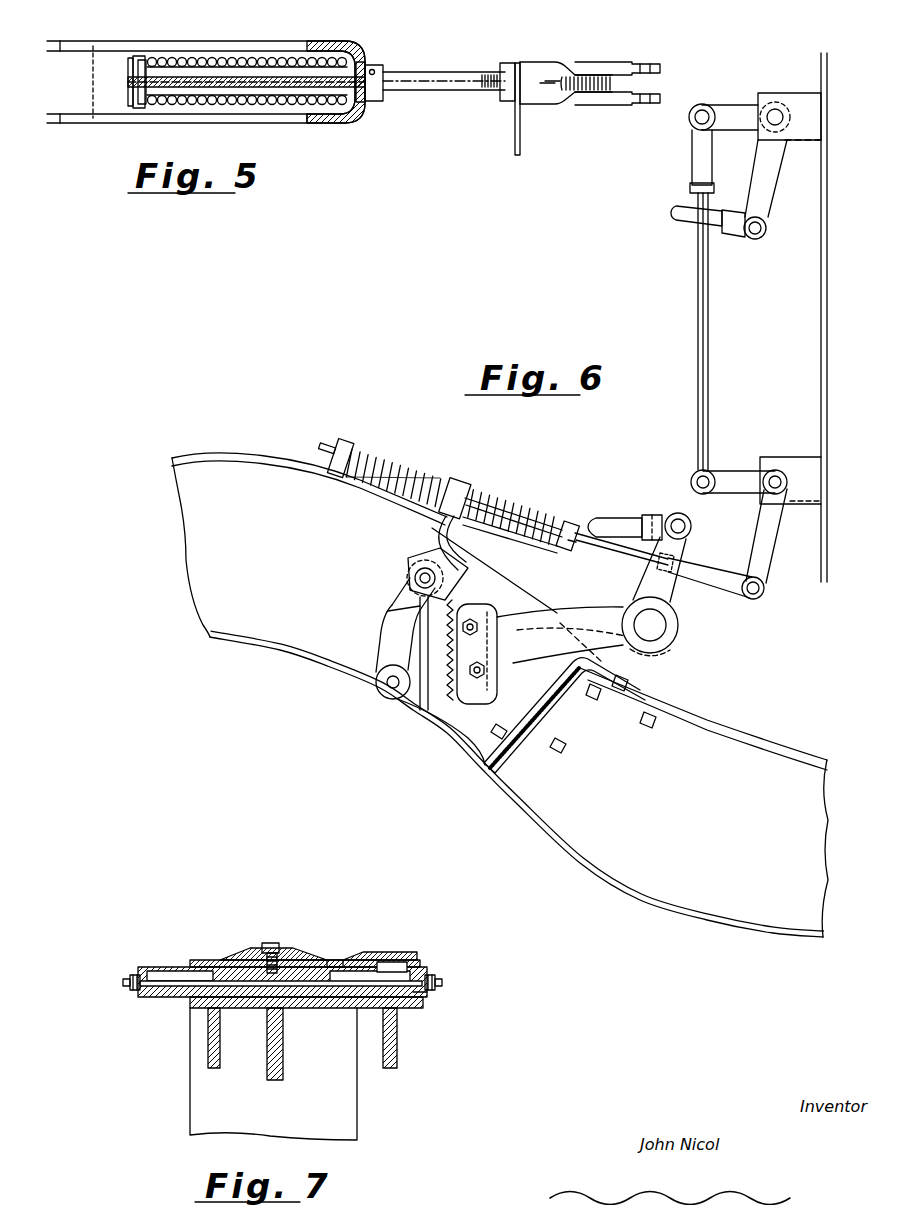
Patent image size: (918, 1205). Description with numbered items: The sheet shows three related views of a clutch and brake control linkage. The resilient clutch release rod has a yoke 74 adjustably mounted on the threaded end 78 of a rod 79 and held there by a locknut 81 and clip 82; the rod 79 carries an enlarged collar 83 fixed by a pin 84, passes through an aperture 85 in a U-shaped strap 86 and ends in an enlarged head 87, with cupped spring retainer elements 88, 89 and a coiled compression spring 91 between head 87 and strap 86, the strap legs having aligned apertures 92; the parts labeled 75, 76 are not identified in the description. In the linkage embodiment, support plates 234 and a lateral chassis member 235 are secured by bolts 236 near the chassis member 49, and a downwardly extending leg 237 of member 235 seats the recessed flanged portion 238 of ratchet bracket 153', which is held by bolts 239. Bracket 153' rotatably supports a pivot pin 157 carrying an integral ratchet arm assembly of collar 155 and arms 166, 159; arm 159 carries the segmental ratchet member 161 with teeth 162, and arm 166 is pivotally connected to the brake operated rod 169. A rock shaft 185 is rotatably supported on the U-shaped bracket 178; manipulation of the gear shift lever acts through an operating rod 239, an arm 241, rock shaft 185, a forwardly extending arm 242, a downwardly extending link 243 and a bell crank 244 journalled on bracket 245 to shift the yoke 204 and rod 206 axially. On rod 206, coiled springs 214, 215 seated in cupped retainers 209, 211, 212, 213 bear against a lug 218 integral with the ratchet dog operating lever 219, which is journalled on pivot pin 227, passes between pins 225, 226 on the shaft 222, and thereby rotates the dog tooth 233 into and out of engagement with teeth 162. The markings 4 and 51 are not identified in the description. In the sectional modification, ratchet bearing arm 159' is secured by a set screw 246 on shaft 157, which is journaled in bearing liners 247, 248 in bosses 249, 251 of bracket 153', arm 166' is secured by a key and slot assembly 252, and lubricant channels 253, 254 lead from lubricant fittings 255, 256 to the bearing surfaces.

In FIG. 5, the yoke 74 is at (545, 67).
In FIG. 5, the clevis arm 75 is at (605, 62).
In FIG. 5, the clevis arm 76 is at (615, 105).
In FIG. 5, the threaded end 78 is at (592, 92).
In FIG. 5, the rod 79 is at (440, 72).
In FIG. 5, the locknut 81 is at (505, 64).
In FIG. 5, the clip 82 is at (516, 145).
In FIG. 5, the enlarged collar 83 is at (384, 66).
In FIG. 5, the pin 84 is at (375, 101).
In FIG. 5, the aperture 85 is at (364, 62).
In FIG. 5, the U-shaped strap 86 is at (332, 41).
In FIG. 5, the enlarged head portion 87 is at (130, 80).
In FIG. 5, the cupped spring retainer element 88 is at (140, 56).
In FIG. 5, the cupped spring retainer element 89 is at (338, 123).
In FIG. 5, the coiled compression spring 91 is at (225, 58).
In FIG. 5, the aligned apertures 92 is at (93, 46).
In FIG. 6, the wall 4 is at (830, 78).
In FIG. 6, the U-shaped bracket 178 is at (808, 110).
In FIG. 6, the rock shaft 185 is at (775, 108).
In FIG. 6, the forwardly extending arm 242 is at (733, 110).
In FIG. 6, the arm 241 is at (770, 183).
In FIG. 6, the operating rod 239 is at (675, 215).
In FIG. 6, the link 243 is at (698, 318).
In FIG. 6, the bracket 245 is at (800, 458).
In FIG. 6, the bell crank 244 is at (730, 495).
In FIG. 6, the yoke 204 is at (740, 592).
In FIG. 6, the rod 206 is at (612, 540).
In FIG. 6, the cupped spring retainer element 209 is at (574, 522).
In FIG. 6, the cupped spring retainer element 211 is at (492, 492).
In FIG. 6, the cupped spring retainer element 212 is at (452, 476).
In FIG. 6, the cupped spring retainer element 213 is at (340, 440).
In FIG. 6, the coiled compression spring 214 is at (530, 510).
In FIG. 6, the coiled spring 215 is at (400, 466).
In FIG. 6, the lug 218 is at (470, 480).
In FIG. 6, the shaft 222 is at (405, 575).
In FIG. 6, the pin 225 is at (428, 556).
In FIG. 6, the pin 226 is at (390, 604).
In FIG. 6, the ratchet dog operating lever 219 is at (375, 646).
In FIG. 6, the pivot pin 227 is at (390, 686).
In FIG. 6, the projecting tooth 233 is at (462, 566).
In FIG. 6, the chassis member 49 is at (216, 470).
In FIG. 6, the ratchet bracket 153' is at (517, 784).
In FIG. 7, the ratchet bracket 153' is at (307, 1074).
In FIG. 6, the floor board 51 is at (752, 922).
In FIG. 6, the collar 155 is at (660, 640).
In FIG. 6, the pivot pin 157 is at (658, 622).
In FIG. 7, the pivot pin 157 is at (162, 997).
In FIG. 6, the arm 159 is at (561, 620).
In FIG. 6, the segmental ratchet member 161 is at (478, 696).
In FIG. 6, the teeth 162 is at (449, 672).
In FIG. 6, the arm 166 is at (681, 557).
In FIG. 6, the rod 169 is at (630, 516).
In FIG. 6, the support plates 234 is at (655, 724).
In FIG. 6, the lateral chassis member 235 is at (600, 696).
In FIG. 6, the bolts 236 is at (625, 680).
In FIG. 6, the downwardly extending leg 237 is at (565, 712).
In FIG. 6, the recessed flanged portion 238 is at (552, 720).
In FIG. 7, the set screw 246 is at (280, 944).
In FIG. 7, the bearing liner 247 is at (200, 960).
In FIG. 7, the bearing liner 248 is at (358, 960).
In FIG. 7, the boss 249 is at (234, 958).
In FIG. 7, the boss 251 is at (336, 960).
In FIG. 7, the key and slot assembly 252 is at (414, 954).
In FIG. 7, the lubricant channel 253 is at (160, 978).
In FIG. 7, the lubricant channel 254 is at (430, 995).
In FIG. 7, the lubricant fitting 255 is at (122, 978).
In FIG. 7, the lubricant fitting 256 is at (444, 978).
In FIG. 7, the ratchet bearing arm 159' is at (306, 1038).
In FIG. 7, the arm 166' is at (426, 1038).